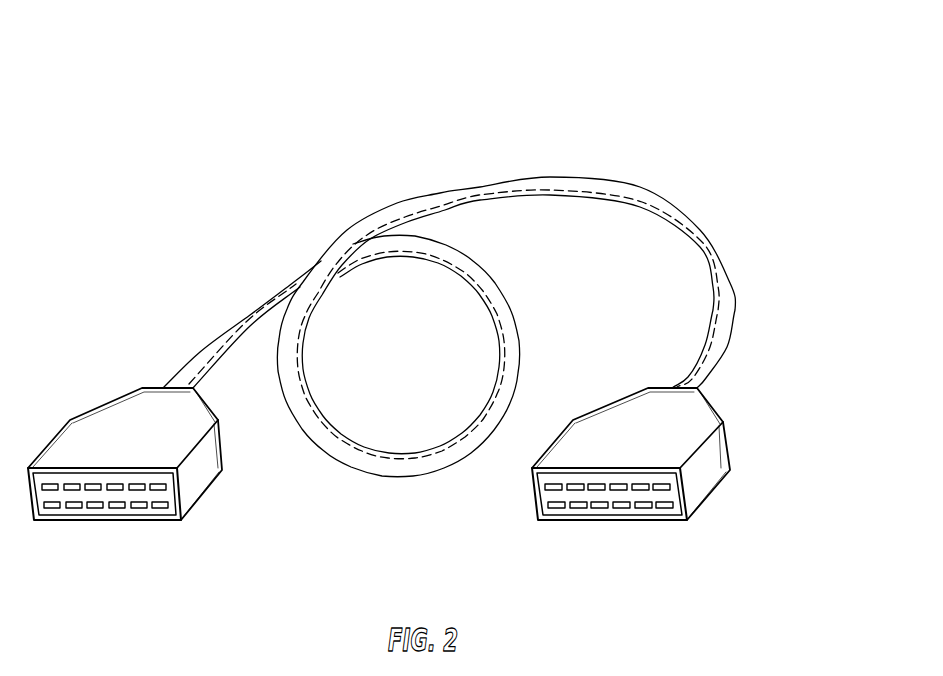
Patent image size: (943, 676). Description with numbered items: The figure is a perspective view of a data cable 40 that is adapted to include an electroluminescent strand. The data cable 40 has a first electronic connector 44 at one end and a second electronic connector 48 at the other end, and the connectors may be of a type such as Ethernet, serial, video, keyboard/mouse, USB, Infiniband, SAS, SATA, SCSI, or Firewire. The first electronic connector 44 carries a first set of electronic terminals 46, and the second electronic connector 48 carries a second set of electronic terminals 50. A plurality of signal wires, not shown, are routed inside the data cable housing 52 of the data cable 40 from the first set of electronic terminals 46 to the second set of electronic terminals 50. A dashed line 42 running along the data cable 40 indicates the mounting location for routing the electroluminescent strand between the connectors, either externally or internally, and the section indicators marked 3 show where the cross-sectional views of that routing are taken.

The data cable 40 is at (563, 52).
The dashed line 42 is at (708, 243).
The first electronic connector 44 is at (90, 410).
The first set of electronic terminals 46 is at (121, 528).
The second electronic connector 48 is at (710, 497).
The second set of electronic terminals 50 is at (608, 528).
The data cable housing 52 is at (472, 184).
The section line 3- 3 is at (600, 177).